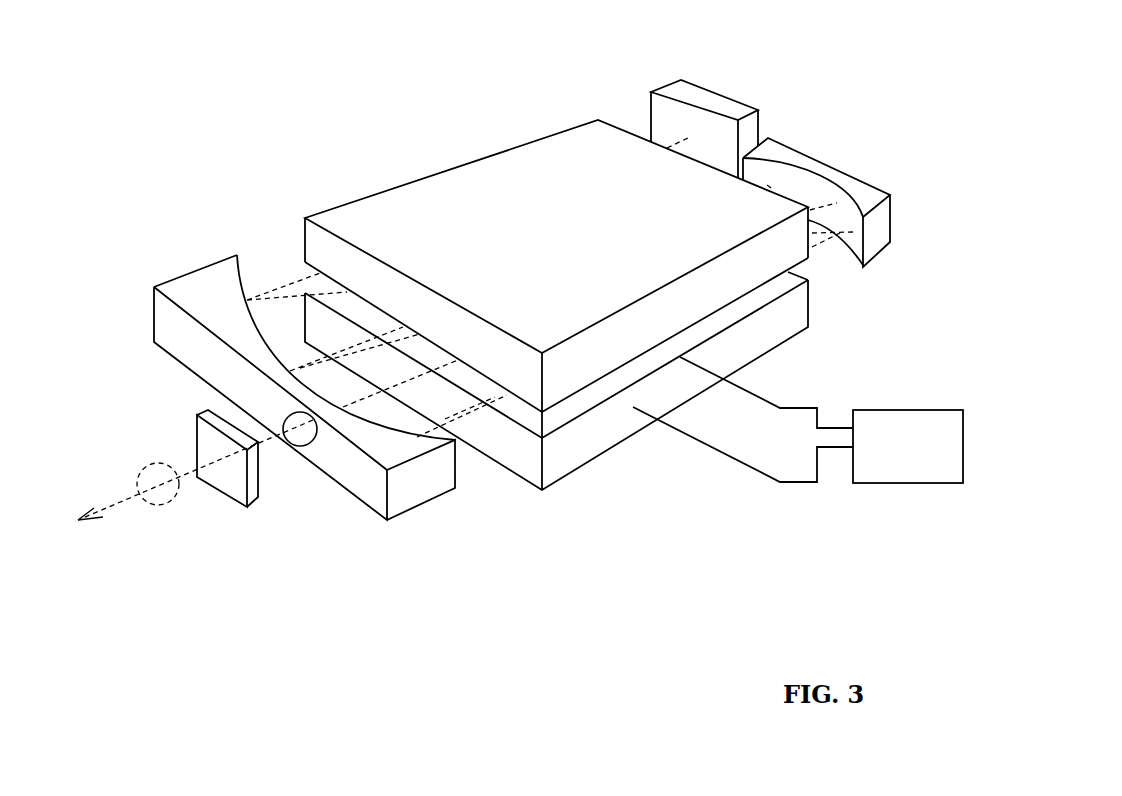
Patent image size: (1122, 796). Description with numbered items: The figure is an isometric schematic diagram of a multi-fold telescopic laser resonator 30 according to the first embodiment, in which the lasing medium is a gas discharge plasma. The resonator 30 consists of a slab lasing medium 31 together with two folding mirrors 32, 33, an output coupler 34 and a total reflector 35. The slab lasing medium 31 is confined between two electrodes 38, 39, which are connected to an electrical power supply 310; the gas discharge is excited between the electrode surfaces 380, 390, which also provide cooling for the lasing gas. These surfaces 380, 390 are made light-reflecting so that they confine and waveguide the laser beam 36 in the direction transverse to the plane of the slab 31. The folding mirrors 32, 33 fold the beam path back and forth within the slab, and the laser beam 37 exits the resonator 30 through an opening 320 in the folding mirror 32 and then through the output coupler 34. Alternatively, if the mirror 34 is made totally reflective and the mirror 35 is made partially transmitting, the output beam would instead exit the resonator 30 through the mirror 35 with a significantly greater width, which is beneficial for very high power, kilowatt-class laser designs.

The laser resonator 30 is at (276, 112).
The slab lasing medium 31 is at (568, 412).
The folding mirror 32 is at (300, 368).
The folding mirror 33 is at (805, 153).
The output coupler 34 is at (227, 467).
The total reflector 35 is at (662, 118).
The laser beam 36 is at (265, 298).
The laser beam 37 is at (162, 497).
The electrode 38 is at (599, 354).
The electrode 39 is at (617, 266).
The electrical power supply 310 is at (798, 420).
The opening 320 is at (302, 440).
The electrode surface 380 is at (357, 307).
The electrode surface 390 is at (397, 325).